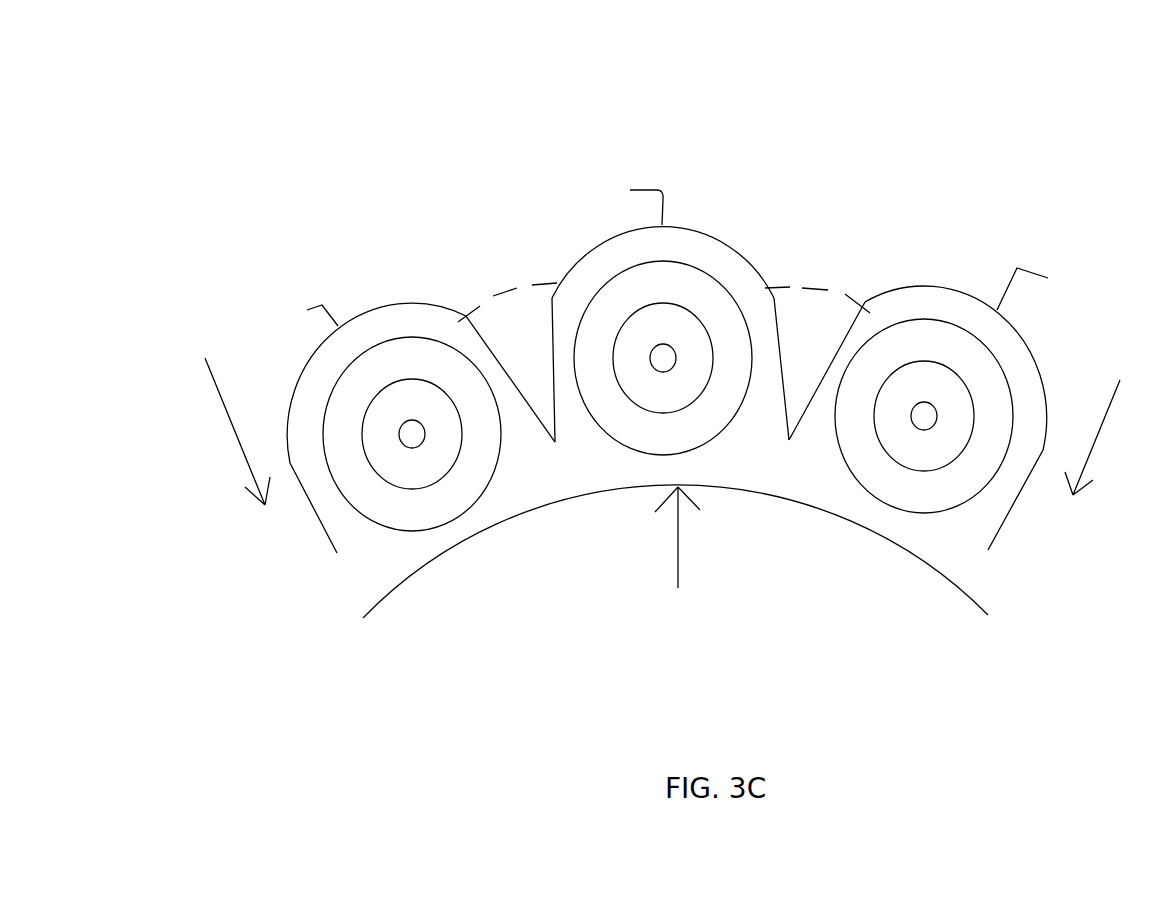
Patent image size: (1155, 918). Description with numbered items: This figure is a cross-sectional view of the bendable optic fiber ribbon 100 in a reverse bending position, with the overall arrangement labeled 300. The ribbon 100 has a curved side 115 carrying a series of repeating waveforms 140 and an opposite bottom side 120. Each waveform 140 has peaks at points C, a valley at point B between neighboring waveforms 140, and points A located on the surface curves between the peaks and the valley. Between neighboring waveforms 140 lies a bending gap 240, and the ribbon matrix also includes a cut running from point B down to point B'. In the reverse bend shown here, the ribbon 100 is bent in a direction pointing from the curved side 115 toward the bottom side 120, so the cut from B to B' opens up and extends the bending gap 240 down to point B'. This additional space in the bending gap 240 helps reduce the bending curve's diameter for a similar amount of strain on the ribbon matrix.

The lens array assembly 300 is at (206, 45).
The waveform 140 is at (385, 303).
The curved side 115 is at (935, 278).
The bending gap 240 is at (513, 320).
The ribbon 100 is at (570, 507).
The bottom side 120 is at (797, 503).